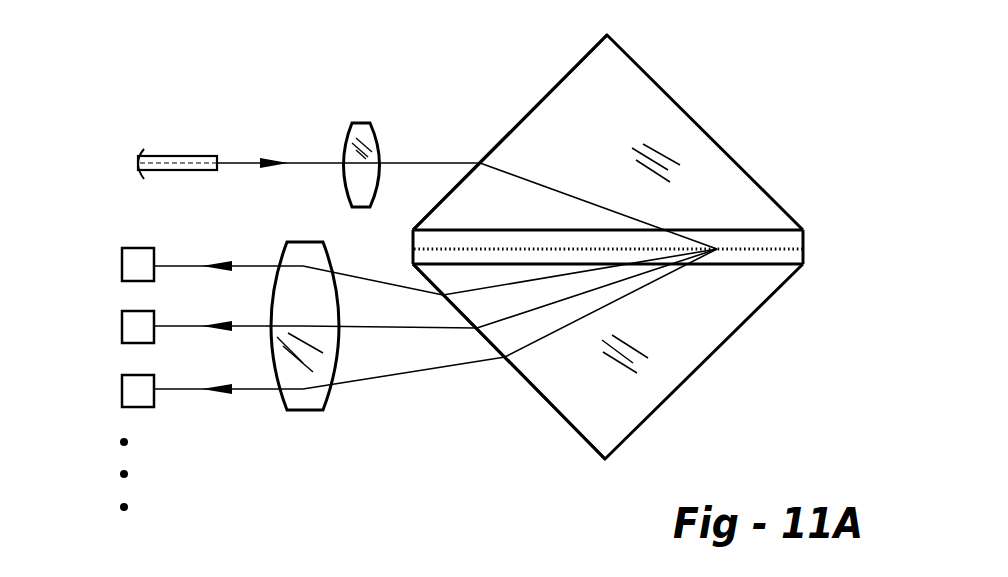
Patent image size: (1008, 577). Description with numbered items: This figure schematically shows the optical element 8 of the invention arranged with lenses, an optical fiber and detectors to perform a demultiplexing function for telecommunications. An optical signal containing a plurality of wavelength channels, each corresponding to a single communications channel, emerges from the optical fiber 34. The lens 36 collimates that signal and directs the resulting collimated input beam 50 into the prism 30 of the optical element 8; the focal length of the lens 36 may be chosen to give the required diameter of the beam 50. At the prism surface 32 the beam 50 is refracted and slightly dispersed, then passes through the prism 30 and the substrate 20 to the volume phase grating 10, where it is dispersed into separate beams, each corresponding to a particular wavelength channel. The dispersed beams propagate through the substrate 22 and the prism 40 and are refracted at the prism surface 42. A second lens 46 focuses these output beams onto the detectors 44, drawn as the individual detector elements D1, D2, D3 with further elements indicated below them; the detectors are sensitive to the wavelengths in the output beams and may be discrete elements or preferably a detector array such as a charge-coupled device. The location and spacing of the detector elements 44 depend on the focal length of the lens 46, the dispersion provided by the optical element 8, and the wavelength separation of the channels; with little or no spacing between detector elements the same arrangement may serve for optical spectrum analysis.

The optical element 8 is at (758, 99).
The volume phase grating 10 is at (807, 249).
The substrate 20 is at (807, 231).
The substrate 22 is at (807, 265).
The prism 30 is at (587, 157).
The prism surface 32 is at (553, 87).
The optical fiber 34 is at (197, 155).
The lens 36 is at (360, 123).
The prism 40 is at (702, 336).
The prism surface 42 is at (555, 410).
The detectors 44 is at (108, 350).
The second lens 46 is at (305, 410).
The collimated input beam 50 is at (467, 176).
The first detector D1 is at (108, 264).
The second detector D2 is at (108, 330).
The third detector D3 is at (108, 389).